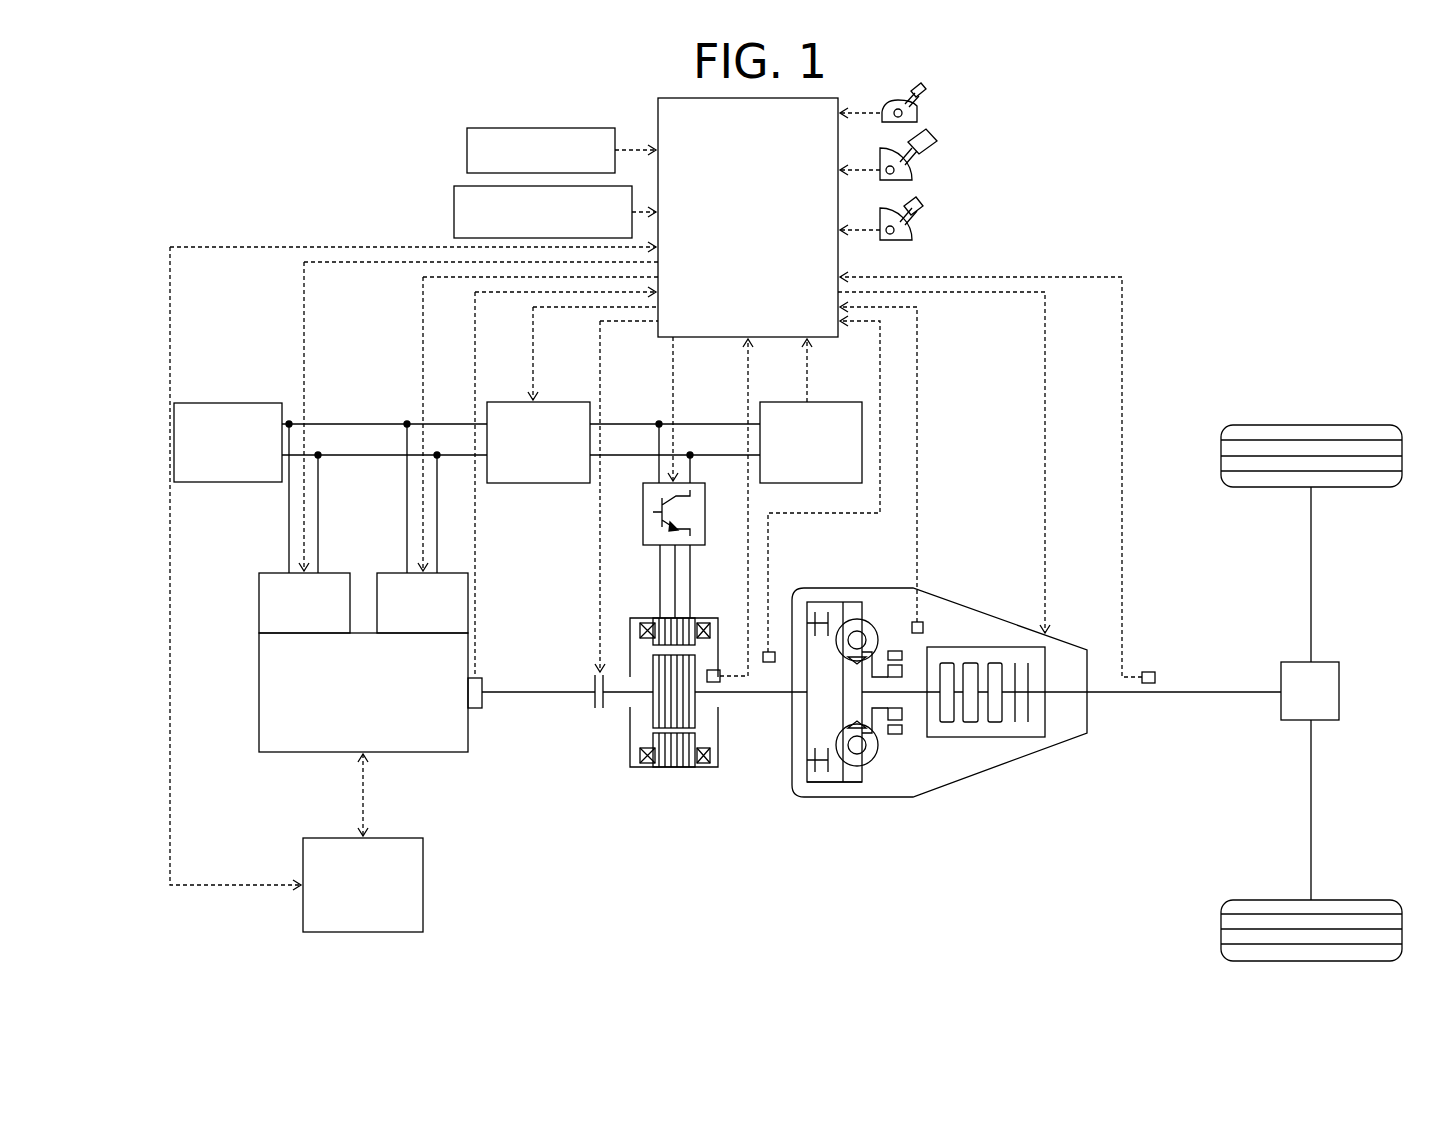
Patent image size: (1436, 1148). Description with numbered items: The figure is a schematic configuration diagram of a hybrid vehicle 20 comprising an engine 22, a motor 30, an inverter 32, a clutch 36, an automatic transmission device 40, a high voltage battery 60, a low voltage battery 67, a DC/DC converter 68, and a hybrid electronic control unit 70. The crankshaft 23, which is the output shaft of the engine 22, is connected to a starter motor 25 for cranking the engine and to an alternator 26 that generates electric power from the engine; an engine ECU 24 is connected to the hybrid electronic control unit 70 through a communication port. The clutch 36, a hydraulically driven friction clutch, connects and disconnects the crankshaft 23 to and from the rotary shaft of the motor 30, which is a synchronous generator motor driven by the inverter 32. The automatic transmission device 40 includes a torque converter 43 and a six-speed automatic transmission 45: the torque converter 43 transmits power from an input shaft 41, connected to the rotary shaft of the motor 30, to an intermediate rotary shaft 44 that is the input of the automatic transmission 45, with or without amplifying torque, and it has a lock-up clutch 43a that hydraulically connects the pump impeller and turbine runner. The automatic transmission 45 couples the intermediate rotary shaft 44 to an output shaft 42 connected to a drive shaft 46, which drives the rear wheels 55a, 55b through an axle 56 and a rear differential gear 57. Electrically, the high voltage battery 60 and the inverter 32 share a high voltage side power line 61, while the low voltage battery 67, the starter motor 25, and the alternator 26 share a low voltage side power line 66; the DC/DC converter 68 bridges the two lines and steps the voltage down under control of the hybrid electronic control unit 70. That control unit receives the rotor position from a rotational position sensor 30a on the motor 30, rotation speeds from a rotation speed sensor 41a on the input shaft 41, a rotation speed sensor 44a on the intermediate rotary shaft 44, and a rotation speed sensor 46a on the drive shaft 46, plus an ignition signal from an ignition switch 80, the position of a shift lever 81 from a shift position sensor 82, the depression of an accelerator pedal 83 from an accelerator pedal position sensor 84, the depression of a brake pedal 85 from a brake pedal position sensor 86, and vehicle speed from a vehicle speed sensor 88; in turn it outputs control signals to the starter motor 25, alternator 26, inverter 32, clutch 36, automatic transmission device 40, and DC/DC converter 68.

The hybrid vehicle 20 is at (1052, 150).
The engine 22 is at (422, 753).
The crankshaft 23 is at (488, 694).
The engine ECU 24 is at (322, 838).
The starter motor 25 is at (393, 572).
The alternator 26 is at (277, 572).
The motor 30 is at (672, 768).
The rotational position sensor 30a is at (715, 668).
The inverter 32 is at (650, 547).
The clutch 36 is at (593, 708).
The automatic transmission device 40 is at (997, 617).
The input shaft 41 is at (773, 695).
The rotation speed sensor 41a is at (763, 664).
The output shaft 42 is at (1103, 694).
The torque converter 43 is at (880, 611).
The lock-up clutch 43a is at (830, 770).
The intermediate rotary shaft 44 is at (913, 694).
The rotation speed sensor 44a is at (927, 623).
The automatic transmission 45 is at (985, 738).
The drive shaft 46 is at (1148, 694).
The rotation speed sensor 46a is at (1147, 671).
The rear wheel 55a is at (1310, 425).
The rear wheel 55b is at (1256, 900).
The axle 56 is at (1313, 572).
The rear differential gear 57 is at (1325, 661).
The high voltage battery 60 is at (828, 402).
The high voltage side power line 61 is at (643, 453).
The low voltage side power line 66 is at (357, 452).
The low voltage battery 67 is at (240, 402).
The DC/DC converter 68 is at (555, 402).
The hybrid electronic control unit 70 is at (656, 112).
The ignition switch 80 is at (467, 150).
The shift lever 81 is at (944, 112).
The shift position sensor 82 is at (905, 114).
The accelerator pedal 83 is at (943, 165).
The accelerator pedal position sensor 84 is at (906, 170).
The brake pedal 85 is at (943, 230).
The brake pedal position sensor 86 is at (906, 231).
The vehicle speed sensor 88 is at (454, 208).